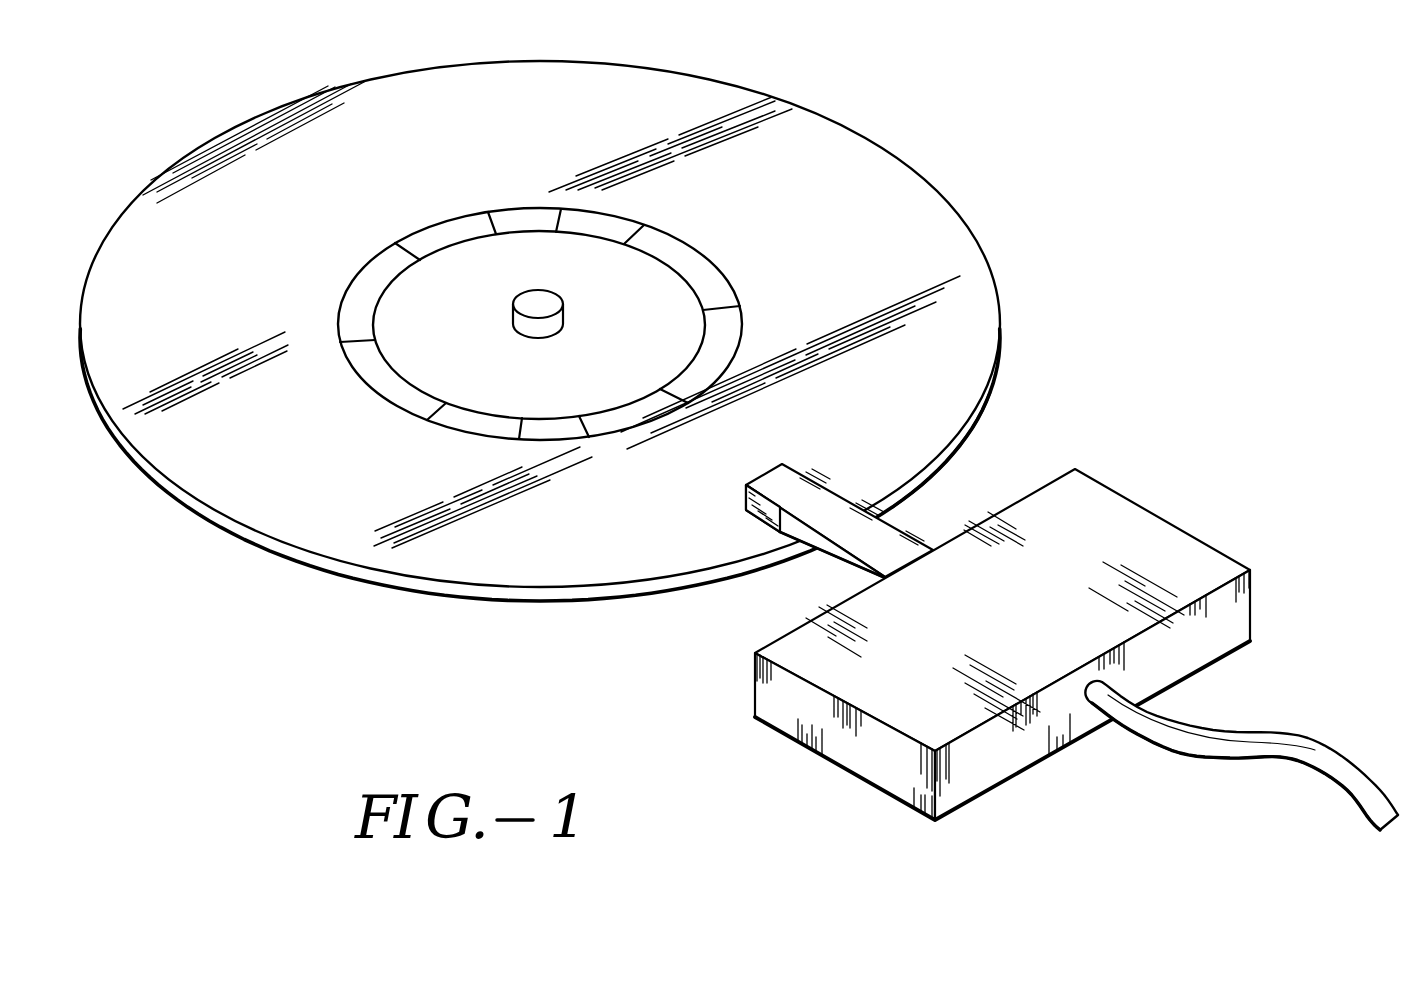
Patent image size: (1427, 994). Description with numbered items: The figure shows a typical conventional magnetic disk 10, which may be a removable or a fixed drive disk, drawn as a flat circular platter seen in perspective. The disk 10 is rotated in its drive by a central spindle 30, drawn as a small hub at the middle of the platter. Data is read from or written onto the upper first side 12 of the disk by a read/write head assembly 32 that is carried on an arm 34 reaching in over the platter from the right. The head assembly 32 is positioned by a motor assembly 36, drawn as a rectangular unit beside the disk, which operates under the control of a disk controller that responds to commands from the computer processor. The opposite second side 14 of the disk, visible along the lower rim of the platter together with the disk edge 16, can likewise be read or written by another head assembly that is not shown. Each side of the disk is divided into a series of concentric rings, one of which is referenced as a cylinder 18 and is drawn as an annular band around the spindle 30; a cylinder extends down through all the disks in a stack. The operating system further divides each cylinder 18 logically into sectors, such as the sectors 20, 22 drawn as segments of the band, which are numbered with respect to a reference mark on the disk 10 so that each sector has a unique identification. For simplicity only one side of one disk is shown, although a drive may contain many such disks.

The disk 10 is at (843, 147).
The first side 12 is at (885, 185).
The second side 14 is at (983, 410).
The disc rim 16 is at (957, 443).
The cylinder 18 is at (687, 262).
The sector 20 is at (605, 225).
The sector 22 is at (528, 218).
The spindle 30 is at (548, 326).
The read/write head assembly 32 is at (767, 512).
The arm 34 is at (837, 507).
The motor assembly 36 is at (1243, 598).